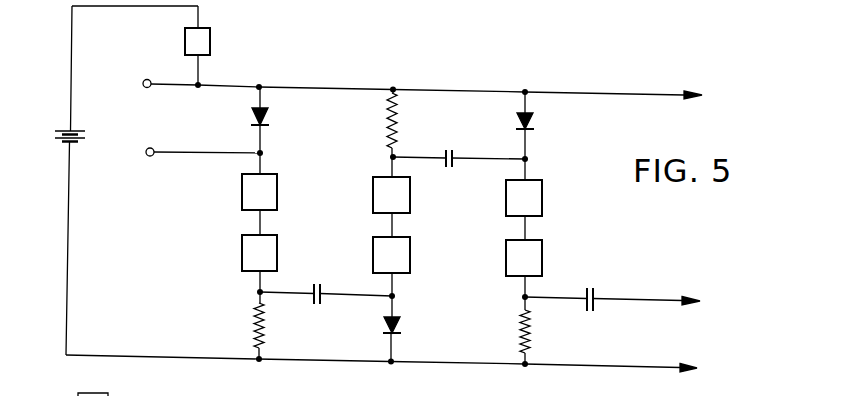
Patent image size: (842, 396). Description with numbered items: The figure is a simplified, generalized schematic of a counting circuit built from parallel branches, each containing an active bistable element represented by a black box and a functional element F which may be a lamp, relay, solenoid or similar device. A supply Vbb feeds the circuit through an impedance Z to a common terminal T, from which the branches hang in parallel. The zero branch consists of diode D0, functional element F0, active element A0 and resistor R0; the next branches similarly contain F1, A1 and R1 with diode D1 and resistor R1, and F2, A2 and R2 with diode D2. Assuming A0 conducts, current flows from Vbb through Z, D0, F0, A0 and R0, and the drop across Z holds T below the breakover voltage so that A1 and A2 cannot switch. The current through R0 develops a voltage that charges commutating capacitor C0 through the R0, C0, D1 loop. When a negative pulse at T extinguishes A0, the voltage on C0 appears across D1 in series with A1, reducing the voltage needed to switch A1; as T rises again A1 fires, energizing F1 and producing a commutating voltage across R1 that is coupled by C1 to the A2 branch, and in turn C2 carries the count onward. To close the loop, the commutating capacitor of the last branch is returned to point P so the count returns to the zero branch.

The impedance Z is at (197, 41).
The terminal T is at (145, 95).
The point P is at (148, 164).
The supply voltage Vbb is at (63, 134).
The diode D0 is at (263, 127).
The diode D1 is at (396, 327).
The diode D2 is at (529, 123).
The functional element F0 is at (259, 192).
The functional element F1 is at (391, 195).
The functional element F2 is at (524, 198).
The active bistable element A0 is at (259, 253).
The active bistable element A1 is at (391, 255).
The active bistable element A2 is at (524, 258).
The resistor R0 is at (265, 318).
The resistor R1 is at (397, 128).
The resistor R2 is at (531, 322).
The commutating capacitor C0 is at (314, 290).
The commutating capacitor C1 is at (452, 156).
The commutating capacitor C2 is at (594, 294).